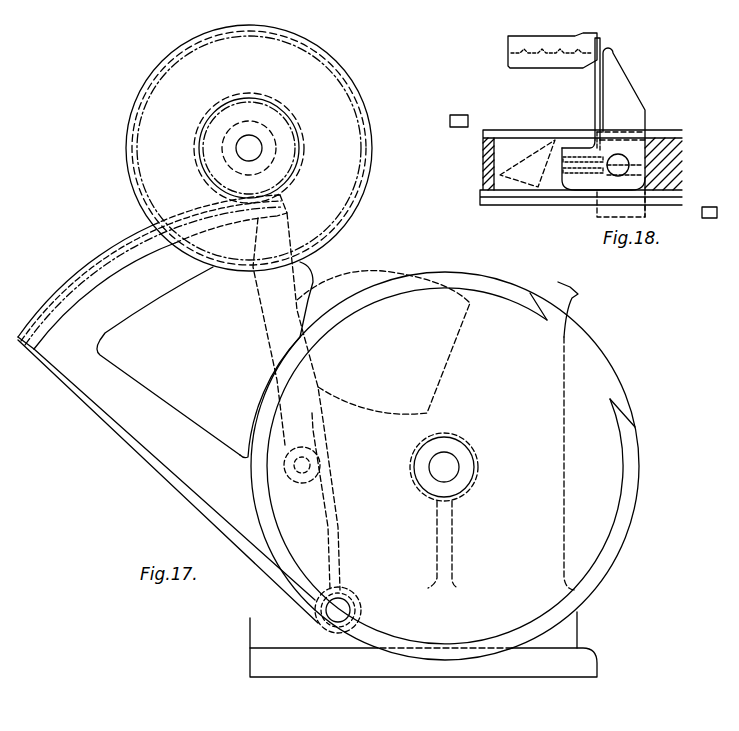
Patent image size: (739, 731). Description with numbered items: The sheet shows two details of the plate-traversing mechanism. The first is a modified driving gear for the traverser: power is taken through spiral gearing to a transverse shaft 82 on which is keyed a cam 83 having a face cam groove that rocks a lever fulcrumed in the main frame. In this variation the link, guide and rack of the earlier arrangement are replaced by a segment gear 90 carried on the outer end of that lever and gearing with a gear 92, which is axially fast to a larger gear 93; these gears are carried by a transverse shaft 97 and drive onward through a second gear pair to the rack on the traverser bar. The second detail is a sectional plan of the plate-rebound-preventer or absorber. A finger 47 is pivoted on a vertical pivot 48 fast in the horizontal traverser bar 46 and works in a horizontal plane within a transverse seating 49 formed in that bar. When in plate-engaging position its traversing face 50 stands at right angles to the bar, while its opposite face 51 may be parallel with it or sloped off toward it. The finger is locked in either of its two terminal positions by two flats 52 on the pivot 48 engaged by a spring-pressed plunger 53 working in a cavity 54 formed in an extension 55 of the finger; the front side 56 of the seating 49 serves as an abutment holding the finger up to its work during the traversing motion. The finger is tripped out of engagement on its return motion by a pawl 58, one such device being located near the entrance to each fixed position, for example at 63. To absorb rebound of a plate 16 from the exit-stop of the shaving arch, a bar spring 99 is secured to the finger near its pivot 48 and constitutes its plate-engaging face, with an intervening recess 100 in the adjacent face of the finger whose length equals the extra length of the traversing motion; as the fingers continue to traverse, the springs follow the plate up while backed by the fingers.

In FIG. 18, the plate 16 is at (509, 52).
In FIG. 18, the traverser bar 46 is at (483, 165).
In FIG. 18, the finger 47 is at (624, 132).
In FIG. 18, the vertical pivot 48 is at (622, 158).
In FIG. 18, the transverse seating 49 is at (527, 163).
In FIG. 18, the traversing face 50 is at (595, 117).
In FIG. 18, the opposite face 51 is at (634, 88).
In FIG. 18, the flats 52 is at (658, 173).
In FIG. 18, the spring-pressed plunger 53 is at (565, 171).
In FIG. 18, the cavity 54 is at (585, 180).
In FIG. 18, the finger extension 55 is at (563, 157).
In FIG. 18, the front side of the seating 56 is at (682, 192).
In FIG. 18, the pawl 58 is at (460, 114).
In FIG. 18, the pawl device 63 is at (716, 207).
In FIG. 17, the transverse shaft 82 is at (448, 463).
In FIG. 17, the cam 83 is at (603, 535).
In FIG. 17, the segment gear 90 is at (137, 253).
In FIG. 17, the gear 92 is at (295, 151).
In FIG. 17, the larger gear 93 is at (236, 28).
In FIG. 17, the transverse shaft 97 is at (248, 135).
In FIG. 18, the bar spring 99 is at (595, 76).
In FIG. 18, the recess 100 is at (612, 52).